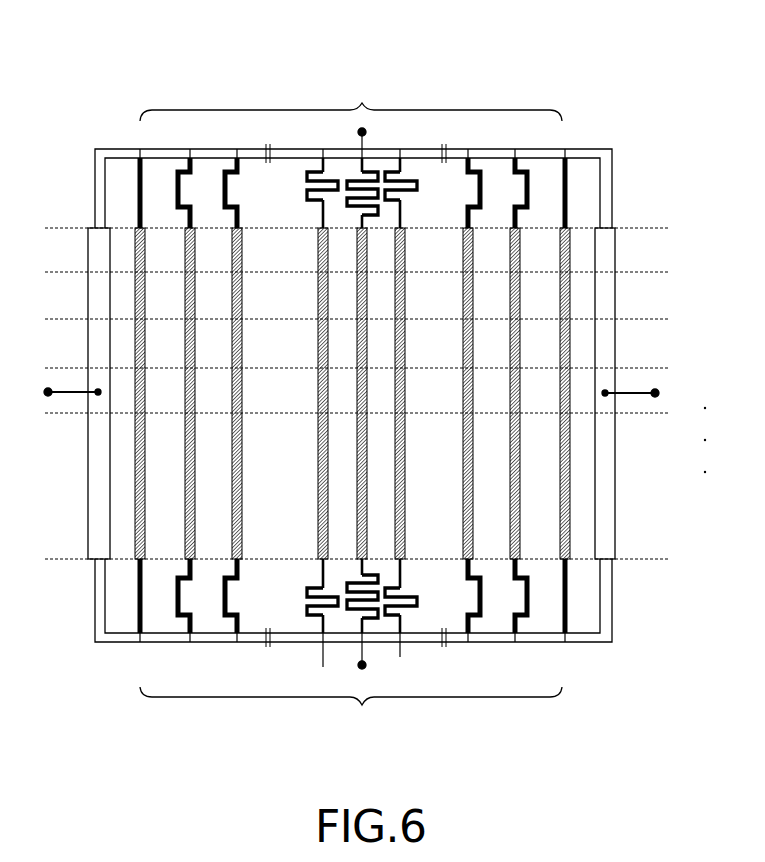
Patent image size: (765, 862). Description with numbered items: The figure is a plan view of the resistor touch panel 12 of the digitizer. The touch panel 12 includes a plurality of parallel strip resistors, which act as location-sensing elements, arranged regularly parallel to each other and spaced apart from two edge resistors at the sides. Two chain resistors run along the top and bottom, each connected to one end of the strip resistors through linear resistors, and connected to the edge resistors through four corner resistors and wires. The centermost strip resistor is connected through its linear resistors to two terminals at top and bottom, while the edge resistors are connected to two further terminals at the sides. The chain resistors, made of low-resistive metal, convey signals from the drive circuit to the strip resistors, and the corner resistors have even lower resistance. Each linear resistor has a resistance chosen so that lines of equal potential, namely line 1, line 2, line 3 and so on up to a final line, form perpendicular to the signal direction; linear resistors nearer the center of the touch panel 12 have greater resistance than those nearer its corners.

The resistor touch panel 12 is at (597, 88).
The line 1 is at (393, 228).
The line 2 is at (393, 273).
The line 3 is at (393, 319).